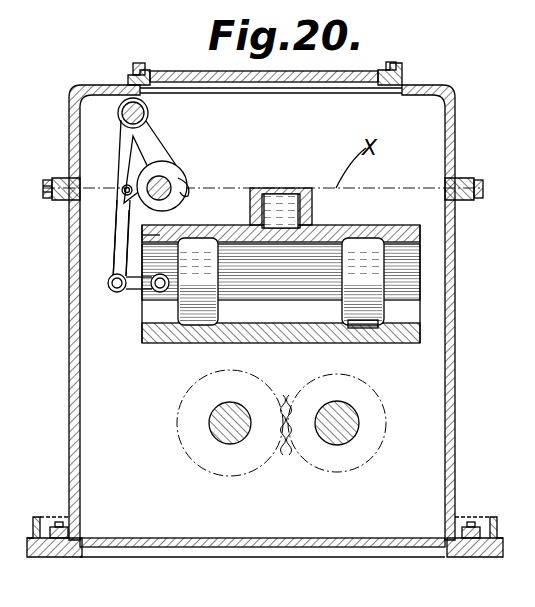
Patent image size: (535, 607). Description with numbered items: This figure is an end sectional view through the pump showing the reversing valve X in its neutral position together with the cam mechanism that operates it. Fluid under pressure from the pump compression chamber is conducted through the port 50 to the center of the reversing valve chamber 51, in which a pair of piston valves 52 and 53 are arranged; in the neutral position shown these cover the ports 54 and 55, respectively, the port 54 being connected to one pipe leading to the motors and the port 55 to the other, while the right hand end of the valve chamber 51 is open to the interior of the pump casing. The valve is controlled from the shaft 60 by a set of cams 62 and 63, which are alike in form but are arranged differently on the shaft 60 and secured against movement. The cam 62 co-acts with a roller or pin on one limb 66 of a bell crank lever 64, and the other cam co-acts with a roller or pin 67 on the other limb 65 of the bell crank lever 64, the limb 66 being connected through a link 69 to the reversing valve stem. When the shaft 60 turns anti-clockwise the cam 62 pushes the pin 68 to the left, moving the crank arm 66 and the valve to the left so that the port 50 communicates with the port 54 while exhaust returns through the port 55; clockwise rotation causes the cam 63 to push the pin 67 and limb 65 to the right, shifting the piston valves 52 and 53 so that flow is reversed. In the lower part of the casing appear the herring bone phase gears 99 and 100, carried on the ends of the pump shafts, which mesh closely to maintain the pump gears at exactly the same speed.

The port 50 is at (290, 195).
The reversing valve chamber 51 is at (264, 308).
The piston valve 52 is at (198, 252).
The piston valve 53 is at (366, 252).
The port 54 is at (192, 330).
The port 55 is at (366, 326).
The shaft 60 is at (176, 186).
The cam 62 is at (146, 184).
The cam 63 is at (152, 178).
The bell crank lever 64 is at (122, 106).
The limb 65 is at (160, 140).
The limb 66 is at (116, 182).
The roller or pin 67 is at (186, 194).
The pin 68 is at (124, 195).
The link 69 is at (136, 292).
The herring bone phase gear 99 is at (350, 462).
The herring bone phase gear 100 is at (200, 456).